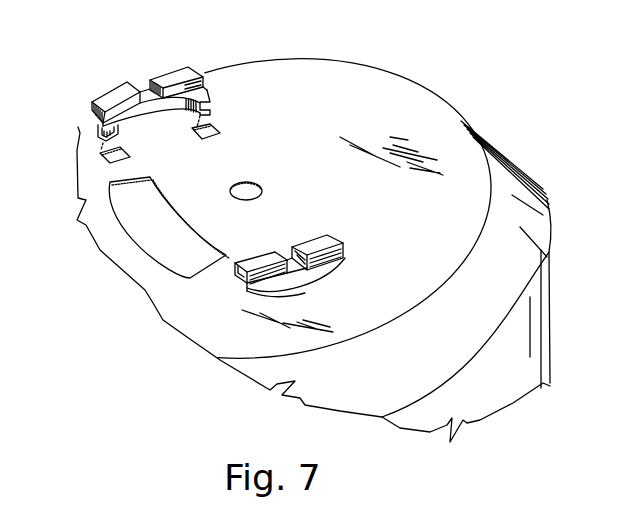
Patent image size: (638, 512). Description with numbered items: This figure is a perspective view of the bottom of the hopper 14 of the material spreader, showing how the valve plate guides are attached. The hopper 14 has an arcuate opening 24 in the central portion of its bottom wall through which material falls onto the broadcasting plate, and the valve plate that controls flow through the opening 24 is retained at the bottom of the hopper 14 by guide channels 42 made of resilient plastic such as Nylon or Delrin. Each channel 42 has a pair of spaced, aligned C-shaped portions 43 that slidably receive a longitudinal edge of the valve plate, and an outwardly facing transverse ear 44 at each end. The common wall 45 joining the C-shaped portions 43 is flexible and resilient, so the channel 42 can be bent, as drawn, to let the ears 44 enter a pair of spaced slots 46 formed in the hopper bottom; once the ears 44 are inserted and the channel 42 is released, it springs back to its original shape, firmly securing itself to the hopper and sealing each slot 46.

The hopper 14 is at (364, 81).
The arcuate opening 24 is at (146, 217).
The guide channel 42 is at (170, 75).
The C-shaped portion 43 is at (212, 85).
The transverse ear 44 is at (97, 129).
The common wall 45 is at (151, 99).
The slot 46 is at (212, 126).